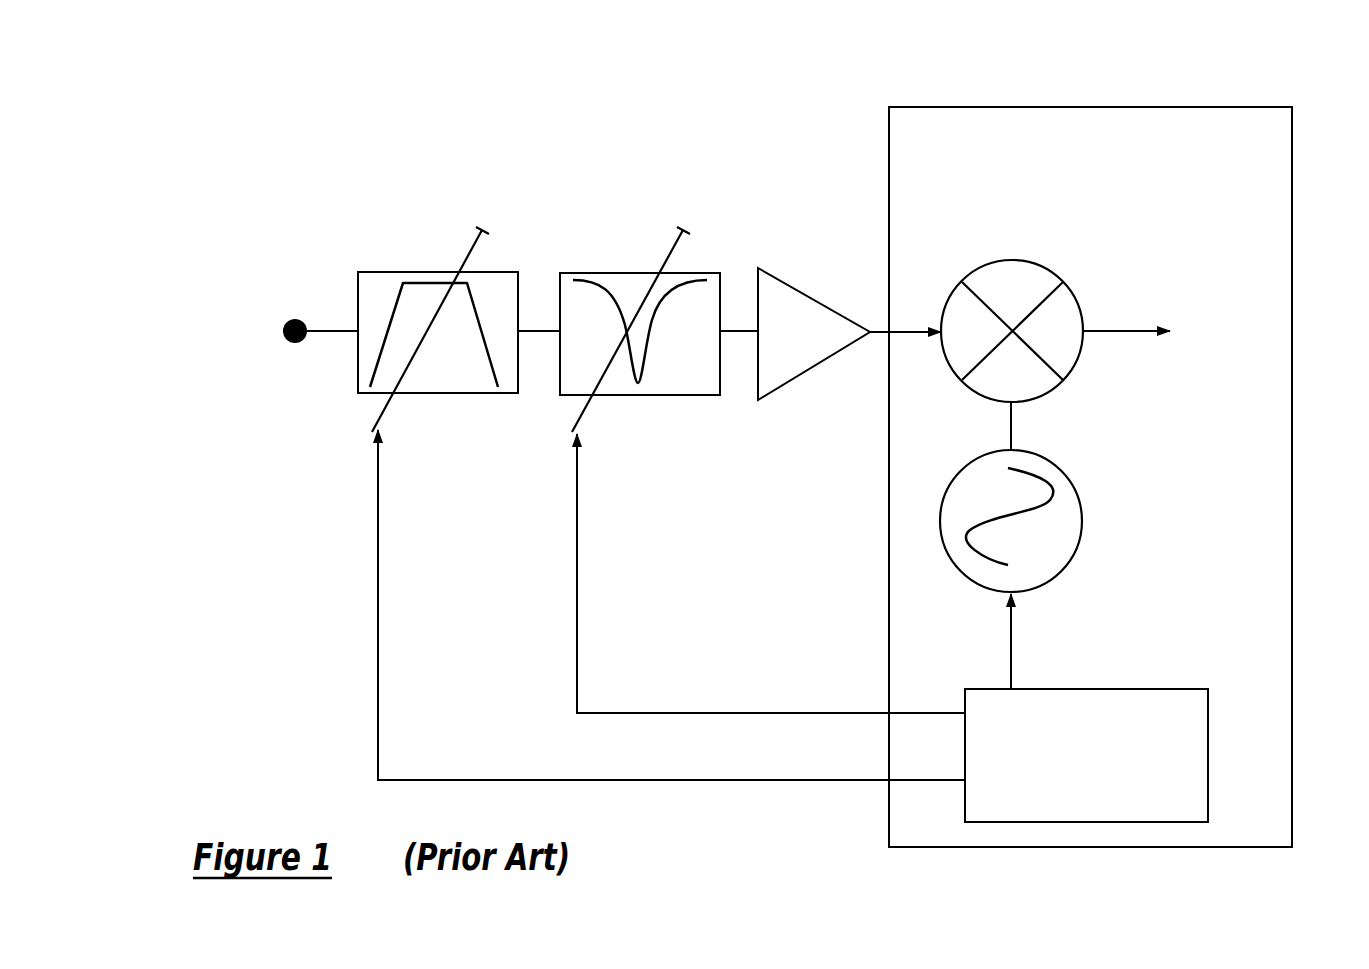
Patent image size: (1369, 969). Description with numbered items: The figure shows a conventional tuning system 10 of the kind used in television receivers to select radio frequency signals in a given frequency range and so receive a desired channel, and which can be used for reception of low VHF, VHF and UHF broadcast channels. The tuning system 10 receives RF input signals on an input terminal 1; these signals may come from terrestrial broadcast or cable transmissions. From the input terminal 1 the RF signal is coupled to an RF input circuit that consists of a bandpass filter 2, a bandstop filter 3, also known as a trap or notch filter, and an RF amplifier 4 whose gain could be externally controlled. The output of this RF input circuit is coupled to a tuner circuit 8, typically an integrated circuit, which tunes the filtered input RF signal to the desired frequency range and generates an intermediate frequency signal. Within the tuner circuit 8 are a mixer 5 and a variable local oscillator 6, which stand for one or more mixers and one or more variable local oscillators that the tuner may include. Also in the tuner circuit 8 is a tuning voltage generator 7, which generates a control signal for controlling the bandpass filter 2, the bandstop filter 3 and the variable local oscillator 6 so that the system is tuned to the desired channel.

The input terminal 1 is at (288, 343).
The bandpass filter 2 is at (376, 268).
The bandstop filter 3 is at (578, 270).
The RF amplifier 4 is at (778, 278).
The mixer 5 is at (1038, 262).
The variable local oscillator 6 is at (1060, 467).
The tuning voltage generator 7 is at (1146, 689).
The tuner circuit 8 is at (976, 107).
The tuning system 10 is at (1150, 82).